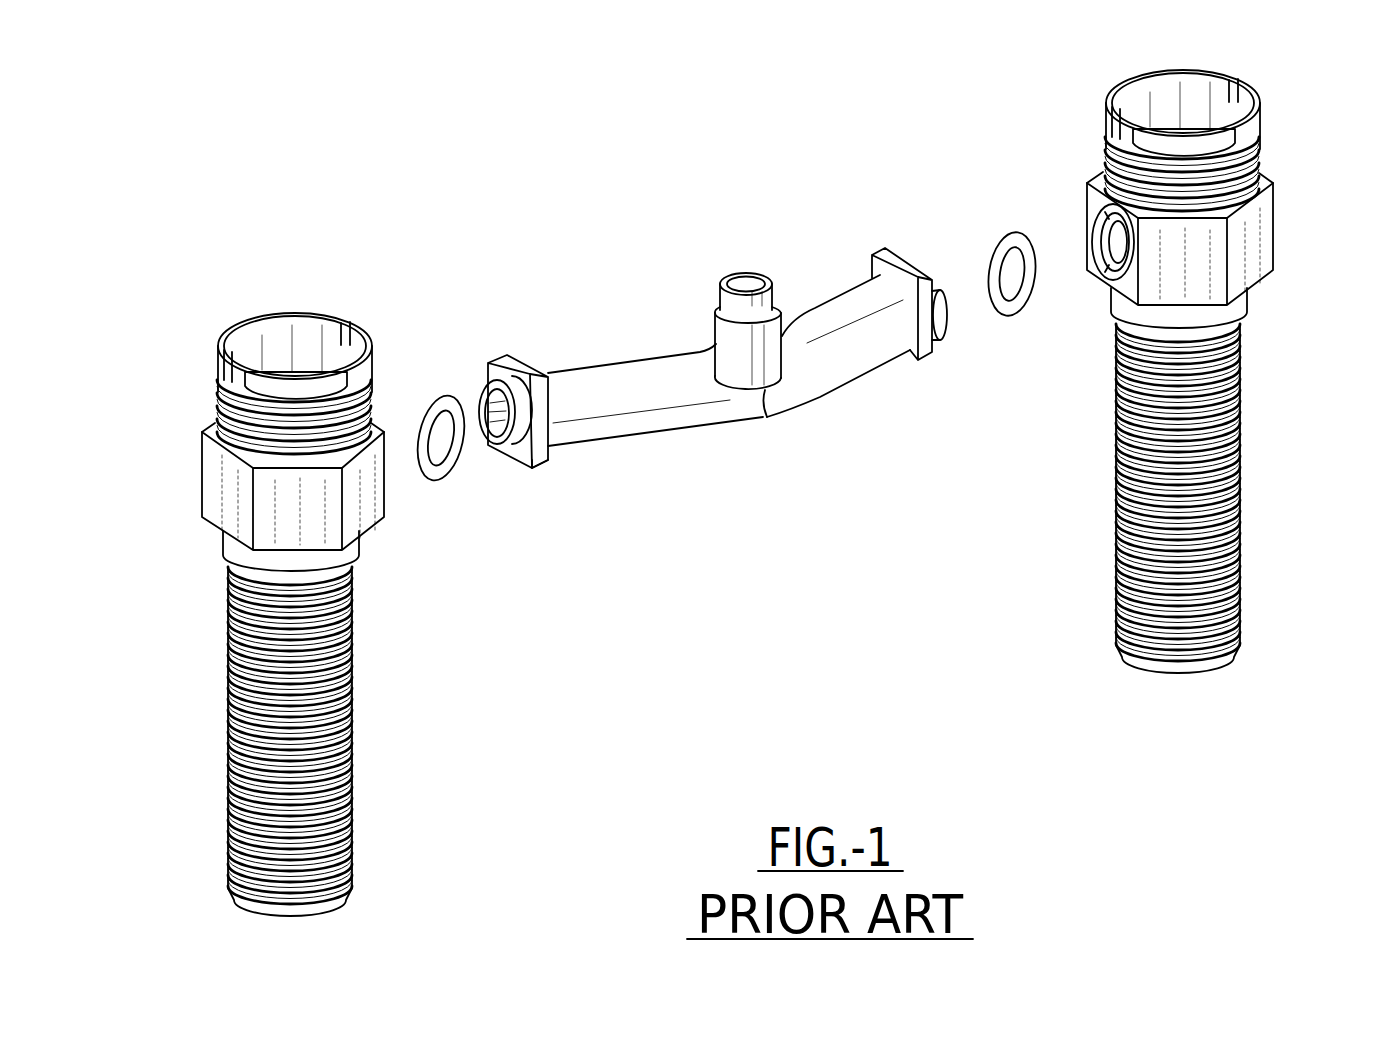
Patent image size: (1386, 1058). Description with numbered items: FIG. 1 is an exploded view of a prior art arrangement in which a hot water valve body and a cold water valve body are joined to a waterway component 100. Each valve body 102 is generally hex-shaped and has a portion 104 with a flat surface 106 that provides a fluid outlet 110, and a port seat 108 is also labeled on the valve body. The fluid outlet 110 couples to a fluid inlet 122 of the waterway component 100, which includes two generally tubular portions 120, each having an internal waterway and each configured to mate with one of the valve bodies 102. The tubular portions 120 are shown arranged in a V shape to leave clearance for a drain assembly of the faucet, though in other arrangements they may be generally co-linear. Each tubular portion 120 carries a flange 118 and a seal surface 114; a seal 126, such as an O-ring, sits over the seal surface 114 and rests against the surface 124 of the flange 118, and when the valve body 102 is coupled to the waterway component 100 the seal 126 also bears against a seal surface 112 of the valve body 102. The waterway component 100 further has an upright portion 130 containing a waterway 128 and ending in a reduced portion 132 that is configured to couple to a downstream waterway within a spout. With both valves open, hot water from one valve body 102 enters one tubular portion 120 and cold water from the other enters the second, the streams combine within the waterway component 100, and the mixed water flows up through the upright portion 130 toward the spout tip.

The waterway component 100 is at (842, 271).
The valve body 102 is at (213, 660).
The portion 104 is at (208, 485).
The flat surface 106 is at (1123, 303).
The port seat 108 is at (1108, 280).
The fluid outlet 110 is at (1107, 253).
The seal surface 112 is at (1102, 235).
The seal surface 114 is at (500, 445).
The flange 118 is at (489, 350).
The tubular portion 120 is at (600, 358).
The fluid inlet 122 is at (495, 445).
The surface 124 is at (533, 468).
The seal 126 is at (419, 378).
The waterway 128 is at (742, 277).
The upright portion 130 is at (705, 312).
The reduced portion 132 is at (768, 303).